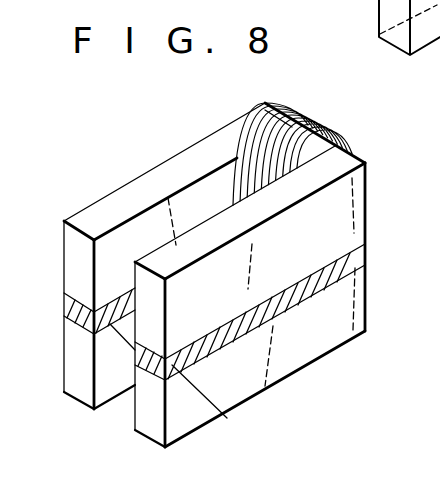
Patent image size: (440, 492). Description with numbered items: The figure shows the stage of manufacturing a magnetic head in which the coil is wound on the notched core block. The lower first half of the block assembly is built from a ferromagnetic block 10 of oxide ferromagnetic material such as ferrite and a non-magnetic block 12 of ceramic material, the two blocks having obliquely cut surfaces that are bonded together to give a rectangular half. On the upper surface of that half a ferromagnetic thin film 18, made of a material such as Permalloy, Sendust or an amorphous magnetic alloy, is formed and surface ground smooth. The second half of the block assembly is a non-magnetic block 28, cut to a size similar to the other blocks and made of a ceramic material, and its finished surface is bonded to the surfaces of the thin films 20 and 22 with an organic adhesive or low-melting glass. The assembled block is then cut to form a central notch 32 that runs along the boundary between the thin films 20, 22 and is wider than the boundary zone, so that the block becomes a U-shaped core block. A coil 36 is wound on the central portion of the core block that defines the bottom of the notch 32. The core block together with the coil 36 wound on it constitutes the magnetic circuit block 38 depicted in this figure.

The ferromagnetic block 10 is at (287, 376).
The non-magnetic block 12 is at (82, 375).
The ferromagnetic thin film 18 is at (73, 313).
The thin film 20 is at (76, 302).
The thin film 22 is at (366, 246).
The non-magnetic block 28 is at (85, 218).
The central notch 32 is at (145, 240).
The coil 36 is at (300, 108).
The magnetic circuit block 38 is at (403, 147).